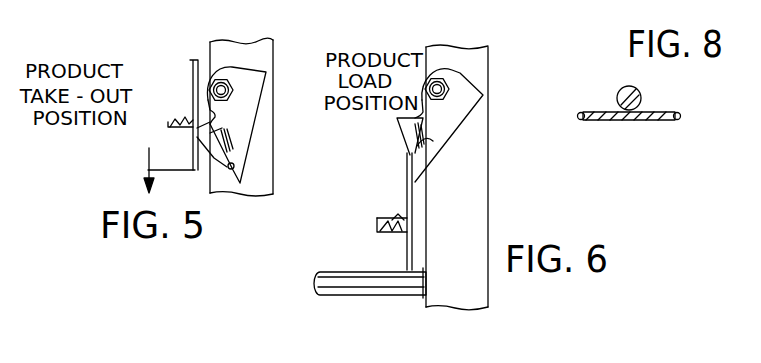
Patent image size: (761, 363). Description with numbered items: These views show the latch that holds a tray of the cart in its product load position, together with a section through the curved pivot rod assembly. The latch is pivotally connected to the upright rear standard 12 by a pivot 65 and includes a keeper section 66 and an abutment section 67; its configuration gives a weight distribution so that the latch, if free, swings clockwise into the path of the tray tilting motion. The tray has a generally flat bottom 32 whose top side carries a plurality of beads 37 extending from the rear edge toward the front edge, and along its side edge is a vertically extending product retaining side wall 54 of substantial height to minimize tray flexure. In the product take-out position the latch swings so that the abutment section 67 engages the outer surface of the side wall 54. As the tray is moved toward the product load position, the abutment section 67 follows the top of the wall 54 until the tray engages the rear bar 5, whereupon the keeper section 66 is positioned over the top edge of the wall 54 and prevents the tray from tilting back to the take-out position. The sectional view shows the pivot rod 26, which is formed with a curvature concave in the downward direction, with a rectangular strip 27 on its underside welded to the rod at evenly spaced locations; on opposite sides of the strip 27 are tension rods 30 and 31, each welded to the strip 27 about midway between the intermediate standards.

In FIG. 6, the rear bar 5 is at (326, 275).
In FIG. 5, the upright rear standard 12 is at (244, 48).
In FIG. 6, the upright rear standard 12 is at (472, 57).
In FIG. 8, the pivot rod 26 is at (640, 96).
In FIG. 8, the rectangular strip 27 is at (658, 121).
In FIG. 8, the tension rod 30 is at (578, 117).
In FIG. 8, the tension rod 31 is at (681, 116).
In FIG. 5, the tray bottom 32 is at (168, 125).
In FIG. 6, the tray bottom 32 is at (380, 234).
In FIG. 5, the beads 37 is at (184, 119).
In FIG. 6, the beads 37 is at (398, 218).
In FIG. 5, the product retaining side wall 54 is at (190, 60).
In FIG. 6, the product retaining side wall 54 is at (407, 184).
In FIG. 6, the pivot 65 is at (447, 87).
In FIG. 5, the keeper section 66 is at (236, 168).
In FIG. 6, the keeper section 66 is at (445, 142).
In FIG. 5, the abutment section 67 is at (224, 130).
In FIG. 6, the abutment section 67 is at (400, 123).